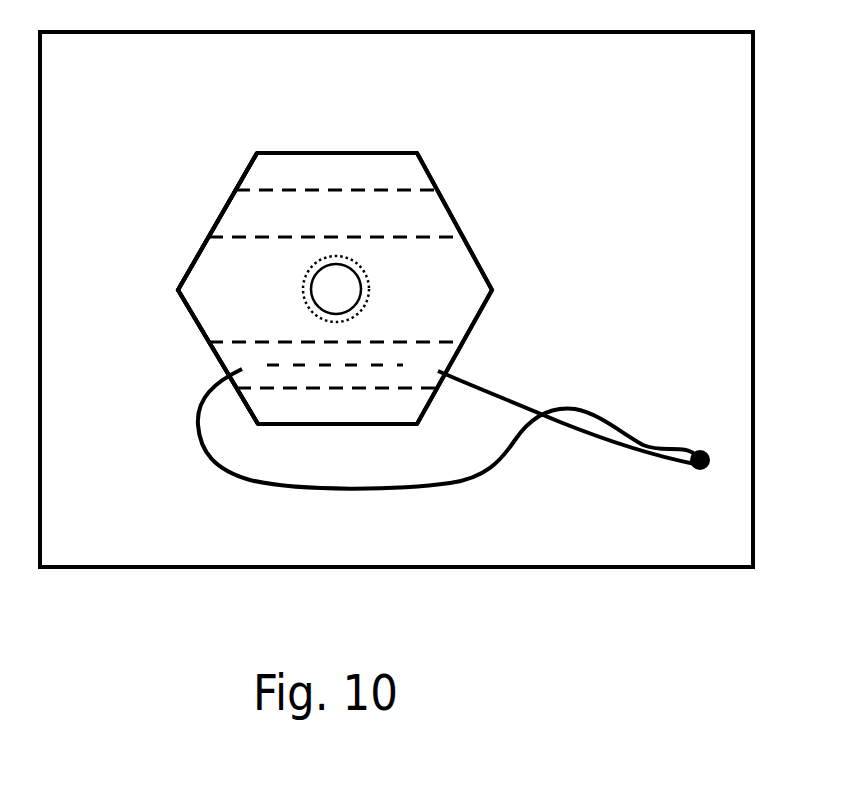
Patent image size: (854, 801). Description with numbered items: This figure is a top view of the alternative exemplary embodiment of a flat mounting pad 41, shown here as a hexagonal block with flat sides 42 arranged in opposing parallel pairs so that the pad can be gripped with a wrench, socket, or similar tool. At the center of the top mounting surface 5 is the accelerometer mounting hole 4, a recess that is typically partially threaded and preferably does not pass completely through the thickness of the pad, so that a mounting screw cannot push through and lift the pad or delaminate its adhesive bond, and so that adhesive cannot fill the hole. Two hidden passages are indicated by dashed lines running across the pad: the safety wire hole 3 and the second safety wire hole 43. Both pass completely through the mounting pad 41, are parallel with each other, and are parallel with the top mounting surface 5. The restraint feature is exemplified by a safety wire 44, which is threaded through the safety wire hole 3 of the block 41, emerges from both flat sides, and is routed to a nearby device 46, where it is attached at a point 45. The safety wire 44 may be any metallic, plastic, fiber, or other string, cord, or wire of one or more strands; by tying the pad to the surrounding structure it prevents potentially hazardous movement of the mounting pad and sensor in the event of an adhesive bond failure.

The safety wire hole 3 is at (238, 358).
The accelerometer mounting hole 4 is at (360, 265).
The top mounting surface 5 is at (223, 293).
The flat mounting pad 41 is at (473, 323).
The flat sides 42 is at (432, 178).
The second safety wire hole 43 is at (309, 217).
The safety wire 44 is at (235, 480).
The attachment point 45 is at (693, 473).
The device 46 is at (593, 569).